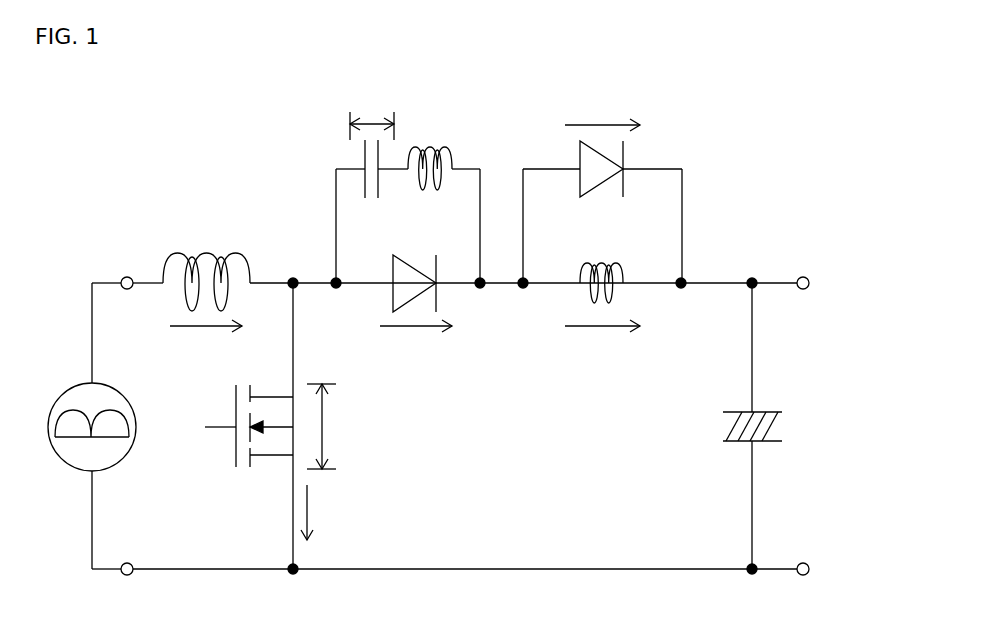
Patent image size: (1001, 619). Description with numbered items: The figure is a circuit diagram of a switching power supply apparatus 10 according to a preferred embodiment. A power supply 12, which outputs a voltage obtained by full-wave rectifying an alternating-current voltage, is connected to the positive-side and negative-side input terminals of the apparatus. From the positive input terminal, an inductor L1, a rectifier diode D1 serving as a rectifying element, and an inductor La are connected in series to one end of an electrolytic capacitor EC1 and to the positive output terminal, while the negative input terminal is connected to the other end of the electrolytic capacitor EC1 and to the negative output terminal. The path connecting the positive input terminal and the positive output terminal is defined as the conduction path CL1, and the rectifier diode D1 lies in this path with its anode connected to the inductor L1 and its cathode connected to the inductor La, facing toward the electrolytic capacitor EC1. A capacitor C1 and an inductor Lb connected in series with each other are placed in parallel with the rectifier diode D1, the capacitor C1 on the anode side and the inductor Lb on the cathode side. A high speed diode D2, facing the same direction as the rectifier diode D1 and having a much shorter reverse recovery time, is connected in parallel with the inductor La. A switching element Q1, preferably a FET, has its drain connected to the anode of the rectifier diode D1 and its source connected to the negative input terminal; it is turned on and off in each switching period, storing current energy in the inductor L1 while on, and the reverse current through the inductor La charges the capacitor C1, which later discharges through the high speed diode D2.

The switching power supply apparatus 10 is at (184, 136).
The power supply 12 is at (70, 465).
The inductor L1 is at (206, 269).
The capacitor C1 is at (370, 180).
The inductor Lb is at (430, 184).
The rectifier diode D1 is at (397, 283).
The high speed diode D2 is at (584, 169).
The inductor La is at (601, 268).
The conduction path CL1 is at (722, 282).
The electrolytic capacitor EC1 is at (728, 414).
The switching element Q1 is at (260, 438).